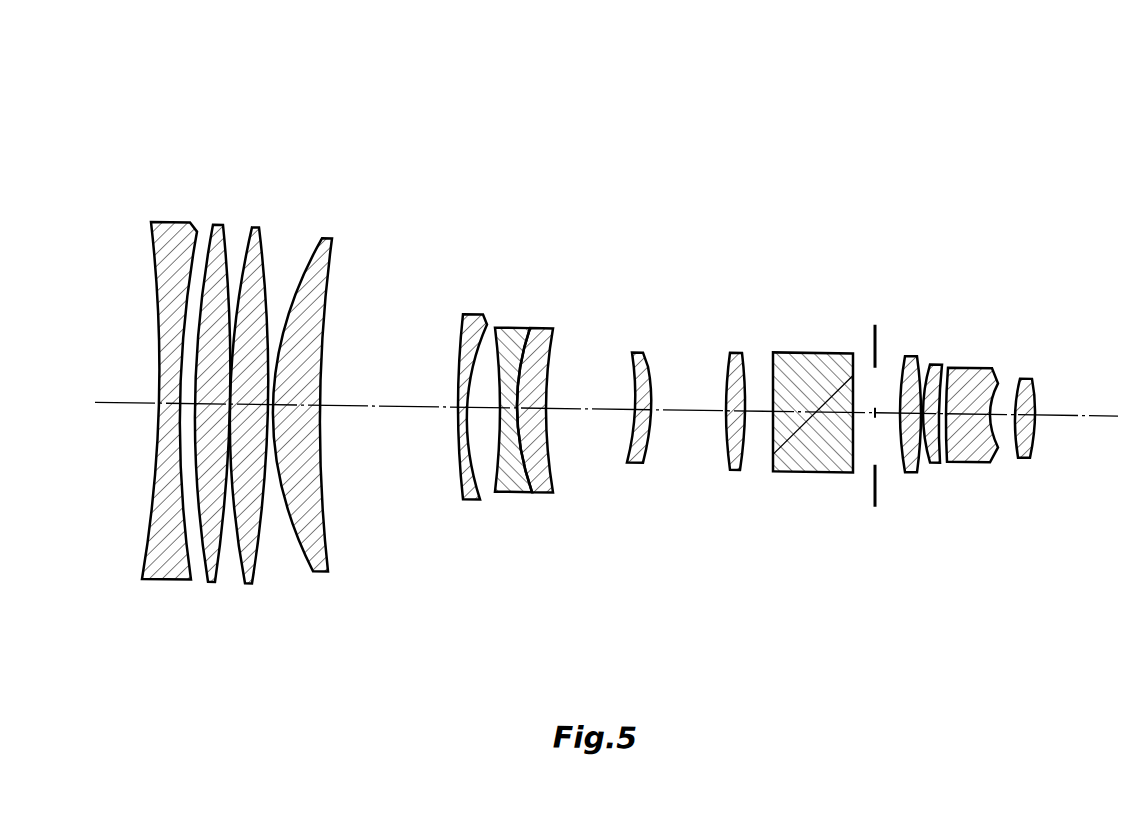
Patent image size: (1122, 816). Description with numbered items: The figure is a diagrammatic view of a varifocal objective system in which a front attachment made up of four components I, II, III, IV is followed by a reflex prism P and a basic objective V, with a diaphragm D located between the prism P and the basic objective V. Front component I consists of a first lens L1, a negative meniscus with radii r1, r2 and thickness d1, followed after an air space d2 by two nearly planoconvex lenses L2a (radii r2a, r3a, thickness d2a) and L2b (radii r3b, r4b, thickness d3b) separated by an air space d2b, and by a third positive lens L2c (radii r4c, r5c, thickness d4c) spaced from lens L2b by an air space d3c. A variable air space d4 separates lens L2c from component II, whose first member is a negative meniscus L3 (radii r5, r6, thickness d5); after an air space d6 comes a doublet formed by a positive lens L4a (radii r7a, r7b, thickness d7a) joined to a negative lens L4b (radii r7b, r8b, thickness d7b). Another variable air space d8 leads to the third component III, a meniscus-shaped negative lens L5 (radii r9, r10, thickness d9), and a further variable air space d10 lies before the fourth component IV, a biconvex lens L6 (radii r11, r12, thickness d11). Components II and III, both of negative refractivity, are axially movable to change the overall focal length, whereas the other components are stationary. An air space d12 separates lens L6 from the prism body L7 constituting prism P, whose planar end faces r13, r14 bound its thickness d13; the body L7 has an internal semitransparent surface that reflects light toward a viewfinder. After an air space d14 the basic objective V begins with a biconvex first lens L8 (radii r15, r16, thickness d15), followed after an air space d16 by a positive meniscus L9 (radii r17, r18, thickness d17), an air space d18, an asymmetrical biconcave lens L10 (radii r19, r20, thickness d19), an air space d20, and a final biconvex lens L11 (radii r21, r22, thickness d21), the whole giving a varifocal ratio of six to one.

The first lens L1 is at (165, 444).
The nearly planoconvex lens L2a is at (206, 445).
The nearly planoconvex lens L2b is at (255, 447).
The third positive lens L2c is at (302, 453).
The negative meniscus L3 is at (458, 492).
The positive lens L4a is at (503, 499).
The negative lens L4b is at (530, 500).
The negative lens L5 is at (630, 512).
The biconvex lens L6 is at (726, 514).
The prism body L7 is at (813, 513).
The biconvex first lens L8 is at (898, 516).
The positive meniscus L9 is at (940, 520).
The asymmetrical biconcave lens L10 is at (986, 523).
The final lens L11 is at (1052, 529).
The front component I is at (328, 659).
The second component II is at (540, 659).
The third component III is at (618, 659).
The rear component IV is at (740, 659).
The reflex prism P is at (825, 659).
The basic objective V is at (1088, 659).
The diaphragm D is at (870, 486).
The radius r1 is at (156, 306).
The radius r2 is at (179, 220).
The radius r2a is at (212, 236).
The radius r3a is at (224, 235).
The radius r3b is at (258, 224).
The radius r4b is at (268, 297).
The radius r4c is at (321, 236).
The radius r5c is at (328, 290).
The radius r5 is at (461, 330).
The radius r6 is at (474, 376).
The radius r7a is at (507, 321).
The radius of cemented surface r7b is at (533, 321).
The radius r8b is at (555, 350).
The radius r9 is at (633, 374).
The radius r10 is at (648, 358).
The radius r11 is at (728, 365).
The radius r12 is at (744, 361).
The planar end face r13 is at (803, 342).
The planar end face r14 is at (830, 342).
The radius r15 is at (905, 357).
The radius r16 is at (922, 354).
The radius r17 is at (931, 349).
The radius r18 is at (941, 349).
The radius r19 is at (950, 355).
The radius r20 is at (1000, 355).
The radius r21 is at (1020, 365).
The radius r22 is at (1037, 367).
The thickness d1 is at (162, 401).
The air space d2 is at (188, 401).
The thickness d2a is at (213, 401).
The air space d2b is at (230, 401).
The thickness d3b is at (258, 401).
The air space d3c is at (267, 401).
The thickness d4c is at (300, 401).
The variable air space d4 is at (388, 401).
The thickness d5 is at (459, 493).
The air space d6 is at (488, 401).
The thickness d7a is at (505, 401).
The thickness d7b is at (540, 401).
The variable air space d8 is at (602, 401).
The thickness d9 is at (642, 454).
The variable air space d10 is at (687, 401).
The thickness d11 is at (732, 460).
The air space d12 is at (760, 401).
The thickness d13 is at (808, 401).
The air space d14 is at (874, 401).
The thickness d15 is at (903, 460).
The air space d16 is at (918, 455).
The thickness d17 is at (931, 450).
The air space d18 is at (941, 450).
The thickness d19 is at (987, 449).
The air space d20 is at (1007, 401).
The thickness d21 is at (1025, 444).